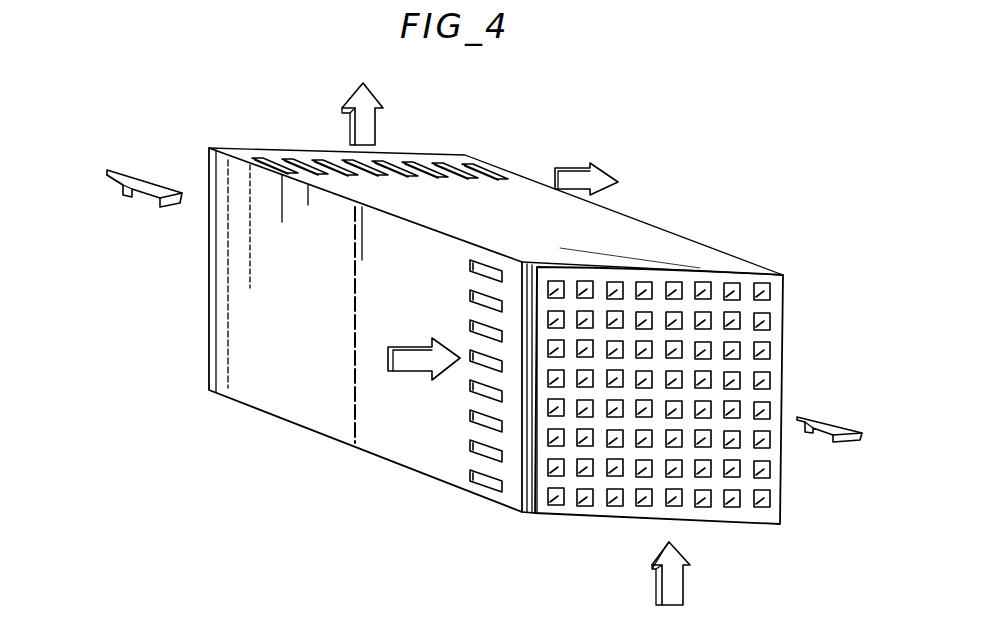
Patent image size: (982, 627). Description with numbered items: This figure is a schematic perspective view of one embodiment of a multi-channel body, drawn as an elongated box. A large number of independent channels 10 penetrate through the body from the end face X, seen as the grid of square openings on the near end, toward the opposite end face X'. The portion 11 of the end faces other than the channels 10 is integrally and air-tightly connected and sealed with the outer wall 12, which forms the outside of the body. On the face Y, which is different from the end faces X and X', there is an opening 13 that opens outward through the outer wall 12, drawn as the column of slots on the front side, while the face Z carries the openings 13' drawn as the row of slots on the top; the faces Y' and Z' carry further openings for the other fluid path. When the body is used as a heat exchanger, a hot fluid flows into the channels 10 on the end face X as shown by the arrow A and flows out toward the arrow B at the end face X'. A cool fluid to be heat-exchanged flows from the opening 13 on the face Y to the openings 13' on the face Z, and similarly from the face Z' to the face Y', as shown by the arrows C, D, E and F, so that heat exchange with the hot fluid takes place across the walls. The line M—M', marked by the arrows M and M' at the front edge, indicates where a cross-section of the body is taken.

The independent channels 10 is at (733, 469).
The portion other than the channels 11 is at (718, 484).
The outer wall 12 is at (768, 371).
The opening 13 is at (454, 391).
The openings 13' is at (380, 148).
The arrow A is at (826, 425).
The arrow B is at (142, 183).
The arrow C is at (410, 358).
The arrow D is at (367, 125).
The arrow E is at (672, 590).
The arrow F is at (574, 180).
The section line M—M' M is at (515, 240).
The section line M— M' is at (513, 525).
The end face X is at (757, 258).
The end face X' is at (176, 292).
The face Y is at (254, 424).
The face Y' is at (669, 209).
The face Z is at (705, 232).
The face Z' is at (353, 478).